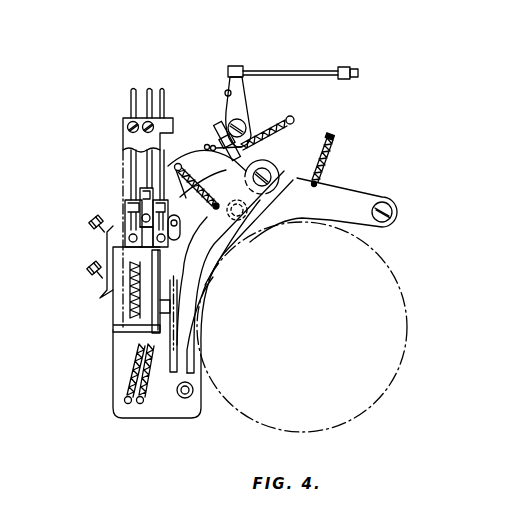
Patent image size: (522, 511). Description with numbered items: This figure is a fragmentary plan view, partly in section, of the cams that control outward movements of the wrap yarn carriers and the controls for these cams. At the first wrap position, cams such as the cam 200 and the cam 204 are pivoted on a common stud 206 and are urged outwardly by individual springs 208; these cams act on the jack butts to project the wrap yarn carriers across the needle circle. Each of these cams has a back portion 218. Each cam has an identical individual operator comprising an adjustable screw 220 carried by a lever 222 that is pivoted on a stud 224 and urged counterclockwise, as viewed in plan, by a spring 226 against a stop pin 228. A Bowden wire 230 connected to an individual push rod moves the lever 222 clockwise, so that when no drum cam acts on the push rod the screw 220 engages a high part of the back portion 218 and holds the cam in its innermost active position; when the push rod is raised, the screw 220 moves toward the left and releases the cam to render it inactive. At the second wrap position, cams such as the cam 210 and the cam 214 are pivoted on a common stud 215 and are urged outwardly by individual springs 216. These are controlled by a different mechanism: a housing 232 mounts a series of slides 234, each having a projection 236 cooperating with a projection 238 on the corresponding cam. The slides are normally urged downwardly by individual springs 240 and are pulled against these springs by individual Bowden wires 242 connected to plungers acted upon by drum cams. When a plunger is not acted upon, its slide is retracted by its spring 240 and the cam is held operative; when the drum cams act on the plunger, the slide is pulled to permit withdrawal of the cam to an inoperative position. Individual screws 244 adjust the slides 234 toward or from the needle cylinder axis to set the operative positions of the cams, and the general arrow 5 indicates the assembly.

The dispensing station 5 is at (76, 286).
The cam 200 is at (214, 262).
The cam 204 is at (339, 193).
The stud 206 is at (390, 206).
The spring 208 is at (334, 160).
The cam 210 is at (196, 332).
The cam 214 is at (200, 298).
The stud 215 is at (286, 178).
The spring 216 is at (199, 190).
The back portion 218 is at (266, 166).
The adjustable screw 220 is at (209, 140).
The lever 222 is at (243, 110).
The stud 224 is at (229, 119).
The spring 226 is at (293, 118).
The stop pin 228 is at (225, 93).
The Bowden wire 230 is at (277, 72).
The housing 232 is at (113, 290).
The slide 234 is at (151, 373).
The projection 236 is at (194, 314).
The projection 238 is at (205, 282).
The spring 240 is at (135, 372).
The Bowden wire 242 is at (155, 95).
The screw 244 is at (117, 333).